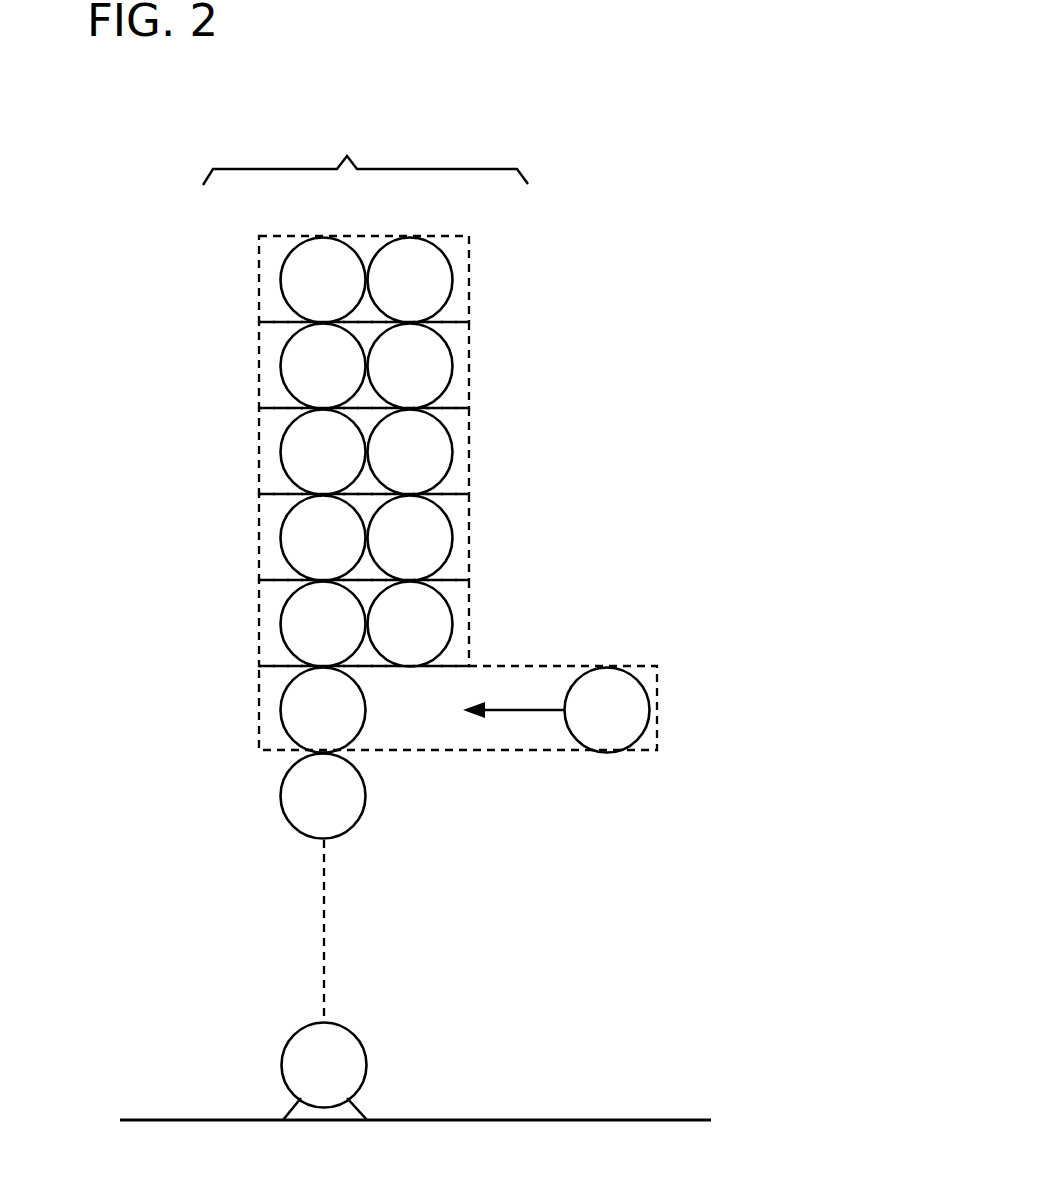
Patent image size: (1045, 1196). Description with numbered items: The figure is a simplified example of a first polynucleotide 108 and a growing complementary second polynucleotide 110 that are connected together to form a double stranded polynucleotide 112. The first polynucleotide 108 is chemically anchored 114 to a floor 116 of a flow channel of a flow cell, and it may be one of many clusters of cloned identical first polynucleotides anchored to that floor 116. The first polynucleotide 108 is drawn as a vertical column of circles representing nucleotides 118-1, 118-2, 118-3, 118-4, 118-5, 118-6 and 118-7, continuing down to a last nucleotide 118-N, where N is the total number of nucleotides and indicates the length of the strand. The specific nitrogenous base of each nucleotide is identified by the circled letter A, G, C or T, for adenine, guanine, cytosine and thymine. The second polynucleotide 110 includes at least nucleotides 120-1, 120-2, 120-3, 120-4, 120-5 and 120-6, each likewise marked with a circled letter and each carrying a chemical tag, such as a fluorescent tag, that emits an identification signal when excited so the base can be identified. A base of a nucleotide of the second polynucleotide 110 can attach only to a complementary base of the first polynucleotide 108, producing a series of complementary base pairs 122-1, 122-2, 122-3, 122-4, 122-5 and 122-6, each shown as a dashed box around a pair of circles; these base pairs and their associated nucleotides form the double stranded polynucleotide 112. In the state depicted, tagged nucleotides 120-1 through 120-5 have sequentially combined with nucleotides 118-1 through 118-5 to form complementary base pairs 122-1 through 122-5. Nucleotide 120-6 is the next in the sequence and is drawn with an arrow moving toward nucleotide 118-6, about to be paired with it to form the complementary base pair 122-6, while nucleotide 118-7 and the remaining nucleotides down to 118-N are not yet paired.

The first polynucleotide 108 is at (323, 226).
The second polynucleotide 110 is at (412, 226).
The double stranded polynucleotide 112 is at (468, 618).
The chemical anchor 114 is at (292, 1108).
The floor 116 is at (523, 1119).
The nucleotide 118-1 is at (282, 280).
The nucleotide 118-2 is at (282, 366).
The nucleotide 118-3 is at (282, 452).
The nucleotide 118-4 is at (282, 538).
The nucleotide 118-5 is at (282, 620).
The nucleotide 118-6 is at (284, 698).
The nucleotide 118-7 is at (282, 793).
The nucleotide 118-N is at (358, 1032).
The nucleotide 120-1 is at (452, 288).
The nucleotide 120-2 is at (452, 377).
The nucleotide 120-3 is at (452, 462).
The nucleotide 120-4 is at (452, 547).
The nucleotide 120-5 is at (452, 634).
The nucleotide 120-6 is at (649, 712).
The complementary base pair 122-1 is at (470, 251).
The complementary base pair 122-2 is at (470, 349).
The complementary base pair 122-3 is at (470, 435).
The complementary base pair 122-4 is at (470, 520).
The complementary base pair 122-5 is at (470, 600).
The complementary base pair 122-6 is at (658, 679).